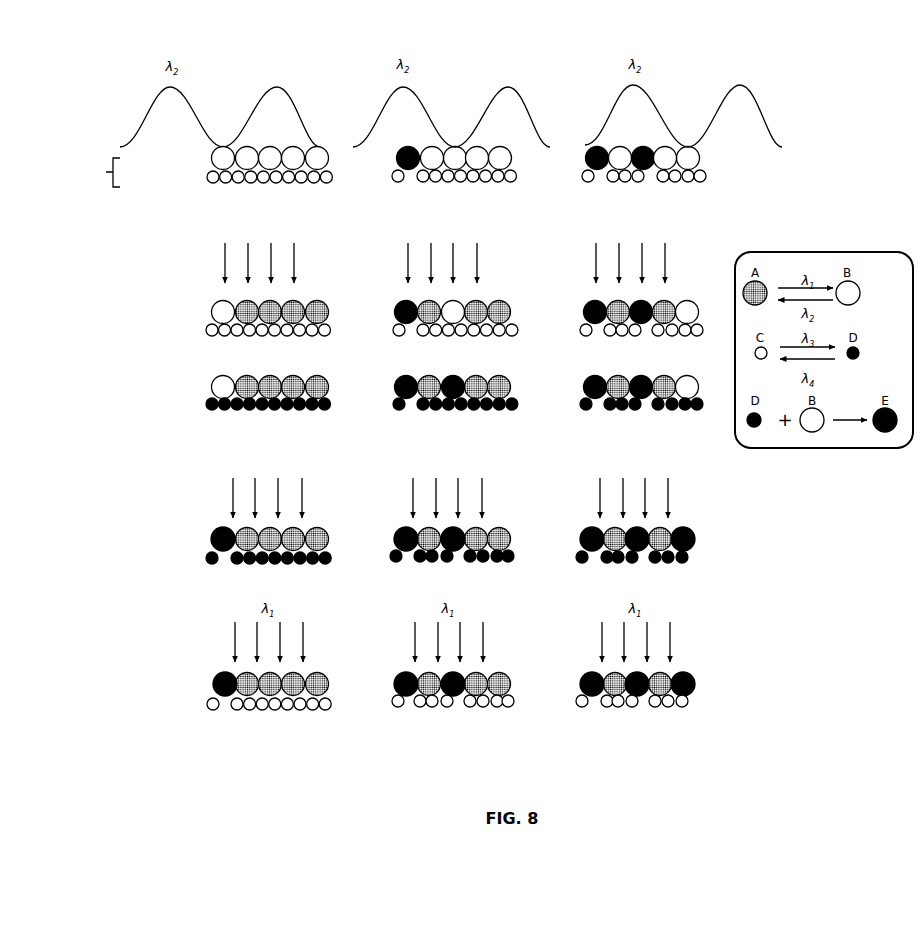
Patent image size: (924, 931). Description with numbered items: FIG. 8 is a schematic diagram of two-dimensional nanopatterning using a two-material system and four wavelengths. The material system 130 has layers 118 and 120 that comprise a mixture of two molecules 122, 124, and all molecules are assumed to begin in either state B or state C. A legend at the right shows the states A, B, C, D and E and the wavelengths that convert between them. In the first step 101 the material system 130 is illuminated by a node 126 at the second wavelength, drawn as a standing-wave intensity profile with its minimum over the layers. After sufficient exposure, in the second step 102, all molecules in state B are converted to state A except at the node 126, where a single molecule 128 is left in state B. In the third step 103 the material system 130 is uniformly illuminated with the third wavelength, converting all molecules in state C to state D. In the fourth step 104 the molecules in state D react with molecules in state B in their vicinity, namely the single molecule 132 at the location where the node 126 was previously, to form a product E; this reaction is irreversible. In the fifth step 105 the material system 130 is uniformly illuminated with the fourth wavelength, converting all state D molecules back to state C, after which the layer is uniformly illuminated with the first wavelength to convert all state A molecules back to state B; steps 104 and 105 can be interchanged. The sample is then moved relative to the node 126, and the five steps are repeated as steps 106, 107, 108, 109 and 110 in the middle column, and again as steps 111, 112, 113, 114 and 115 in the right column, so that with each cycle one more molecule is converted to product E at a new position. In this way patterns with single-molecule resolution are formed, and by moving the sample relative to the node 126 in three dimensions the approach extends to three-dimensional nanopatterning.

The first step 101 is at (220, 81).
The second step 102 is at (231, 152).
The third step 103 is at (268, 290).
The fourth step 104 is at (268, 407).
The fifth step 105 is at (268, 525).
The first repeated step 106 is at (451, 100).
The second repeated step 107 is at (454, 179).
The third repeated step 108 is at (455, 290).
The fourth repeated step 109 is at (455, 407).
The fifth repeated step 110 is at (452, 520).
The first step of third sequence 111 is at (683, 100).
The second step of third sequence 112 is at (644, 179).
The third step of third sequence 113 is at (641, 290).
The fourth step of third sequence 114 is at (641, 407).
The fifth step of third sequence 115 is at (635, 520).
The layer 118 is at (192, 158).
The layer 120 is at (192, 178).
The molecule 122 is at (224, 164).
The molecule 124 is at (211, 180).
The node 126 is at (225, 146).
The single molecule 128 is at (230, 313).
The material system 130 is at (95, 172).
The single molecule 132 is at (215, 537).